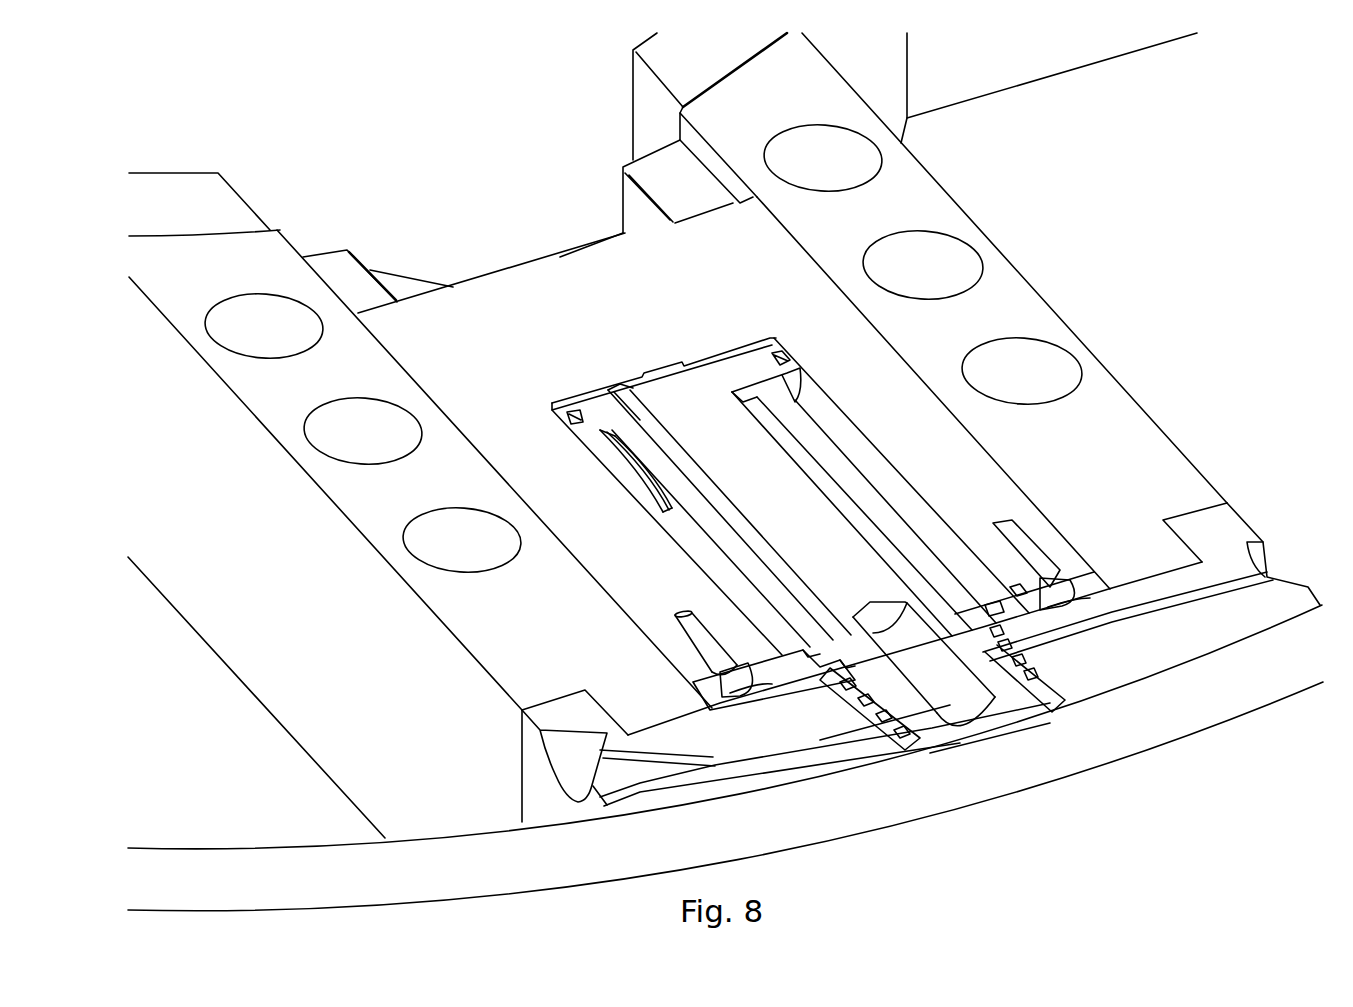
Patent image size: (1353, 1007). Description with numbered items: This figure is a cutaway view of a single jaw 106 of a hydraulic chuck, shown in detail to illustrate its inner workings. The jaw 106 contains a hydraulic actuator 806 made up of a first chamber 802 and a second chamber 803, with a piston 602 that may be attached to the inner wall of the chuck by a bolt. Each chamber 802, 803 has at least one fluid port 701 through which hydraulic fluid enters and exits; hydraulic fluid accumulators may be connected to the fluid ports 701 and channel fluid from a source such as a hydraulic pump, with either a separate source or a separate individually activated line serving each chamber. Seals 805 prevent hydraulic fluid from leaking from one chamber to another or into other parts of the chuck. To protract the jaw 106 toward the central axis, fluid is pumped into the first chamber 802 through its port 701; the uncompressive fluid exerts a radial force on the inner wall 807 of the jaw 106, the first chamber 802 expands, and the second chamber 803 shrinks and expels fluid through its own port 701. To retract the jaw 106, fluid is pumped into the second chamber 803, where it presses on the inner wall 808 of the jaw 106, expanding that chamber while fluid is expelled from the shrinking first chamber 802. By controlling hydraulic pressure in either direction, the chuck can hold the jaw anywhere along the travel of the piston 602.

The jaw 106 is at (480, 312).
The piston 602 is at (850, 550).
The fluid port 701 is at (567, 760).
The first chamber 802 is at (617, 402).
The second chamber 803 is at (865, 455).
The seal 805 is at (787, 355).
The hydraulic actuator 806 is at (727, 337).
The inner wall of the jaw 807 is at (582, 392).
The inner wall of the jaw 808 is at (752, 640).